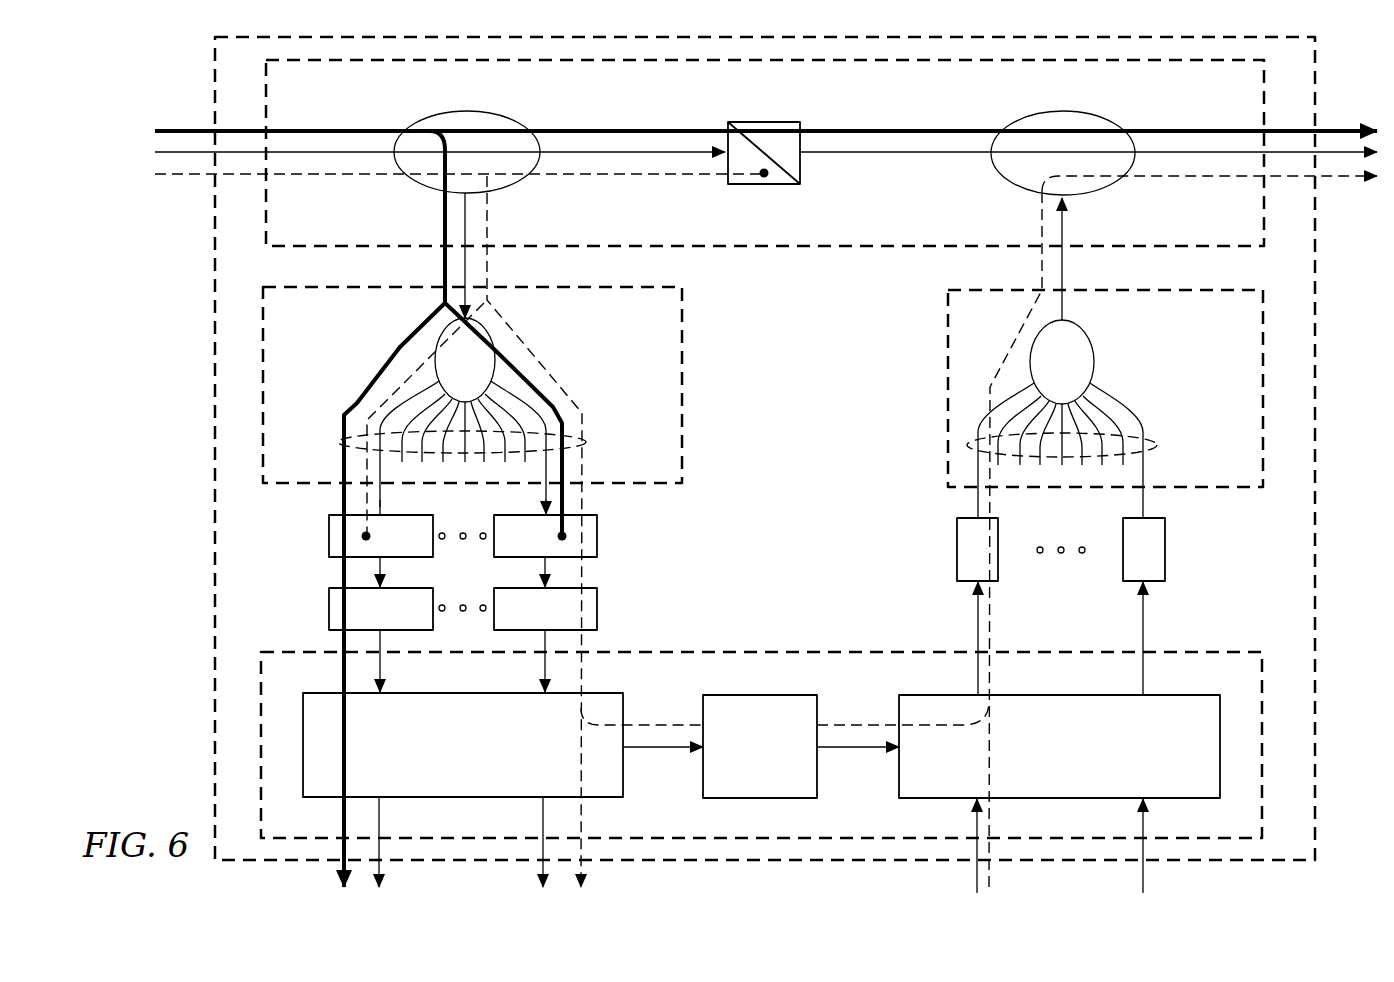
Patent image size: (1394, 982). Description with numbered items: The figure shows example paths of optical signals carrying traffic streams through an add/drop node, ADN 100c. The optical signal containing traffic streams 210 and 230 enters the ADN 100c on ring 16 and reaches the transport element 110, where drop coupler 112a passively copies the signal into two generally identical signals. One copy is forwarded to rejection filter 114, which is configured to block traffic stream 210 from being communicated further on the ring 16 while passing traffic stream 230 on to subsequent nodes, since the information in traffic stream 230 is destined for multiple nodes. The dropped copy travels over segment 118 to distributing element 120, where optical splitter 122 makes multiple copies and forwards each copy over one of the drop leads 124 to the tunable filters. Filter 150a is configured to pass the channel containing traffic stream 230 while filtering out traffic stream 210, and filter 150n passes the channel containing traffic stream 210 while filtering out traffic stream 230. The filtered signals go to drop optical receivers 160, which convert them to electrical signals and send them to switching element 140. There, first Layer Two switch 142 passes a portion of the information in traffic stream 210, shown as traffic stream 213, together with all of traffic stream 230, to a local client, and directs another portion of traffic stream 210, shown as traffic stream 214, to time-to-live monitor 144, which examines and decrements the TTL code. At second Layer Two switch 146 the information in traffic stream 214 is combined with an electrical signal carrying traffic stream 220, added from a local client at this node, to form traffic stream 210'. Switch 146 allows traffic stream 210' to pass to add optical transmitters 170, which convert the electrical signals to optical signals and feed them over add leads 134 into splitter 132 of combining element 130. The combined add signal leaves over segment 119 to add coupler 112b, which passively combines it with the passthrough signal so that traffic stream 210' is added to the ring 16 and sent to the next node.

The ring 16 is at (155, 152).
The ADN 100c is at (214, 564).
The transport element 110 is at (793, 249).
The drop coupler 112a is at (430, 115).
The add coupler 112b is at (1123, 100).
The rejection filter 114 is at (802, 170).
The segment 118 is at (467, 277).
The segment 119 is at (1064, 280).
The distributing element 120 is at (684, 367).
The optical splitter 122 is at (491, 333).
The drop leads 124 is at (592, 443).
The combining element 130 is at (946, 366).
The splitter 132 is at (1092, 348).
The add leads 134 is at (1158, 450).
The switching element 140 is at (769, 650).
The first Layer Two switch 142 is at (503, 790).
The time-to-live monitor 144 is at (818, 773).
The second Layer Two switch 146 is at (1059, 794).
The tunable filter 150a is at (329, 538).
The tunable filter 150n is at (600, 538).
The drop optical receivers 160 is at (329, 612).
The add optical transmitters 170 is at (957, 553).
The traffic stream 210 is at (462, 528).
The traffic stream 210' is at (1183, 534).
The traffic stream 213 is at (583, 668).
The traffic stream 214 is at (840, 725).
The traffic stream 220 is at (1004, 873).
The traffic stream 230 is at (186, 116).